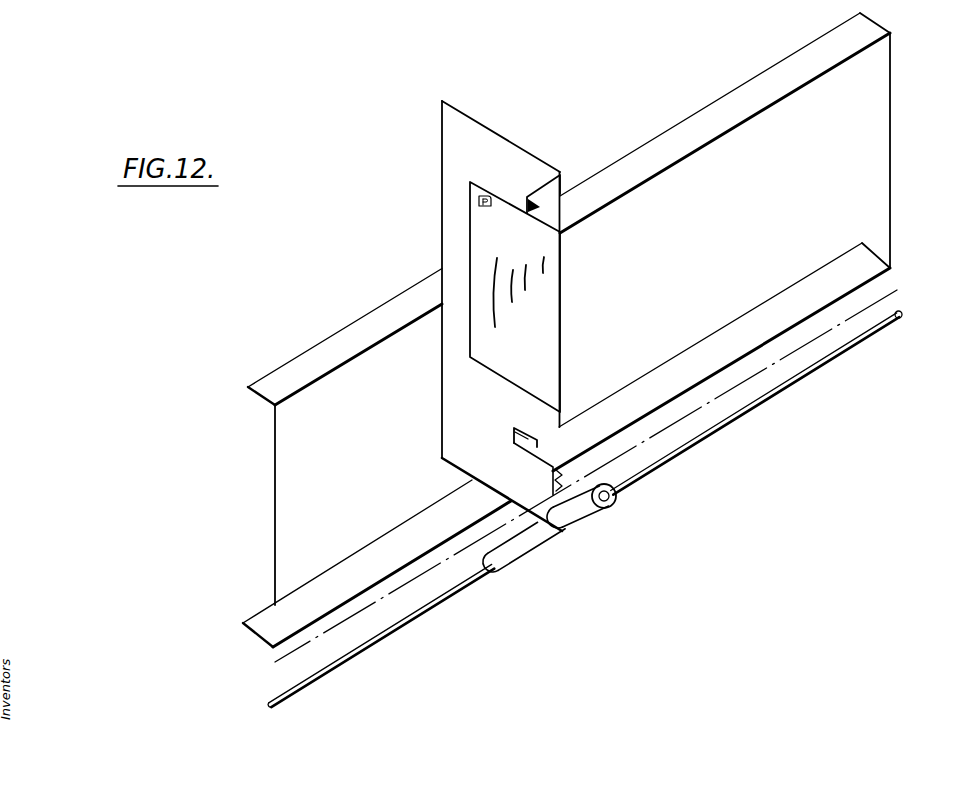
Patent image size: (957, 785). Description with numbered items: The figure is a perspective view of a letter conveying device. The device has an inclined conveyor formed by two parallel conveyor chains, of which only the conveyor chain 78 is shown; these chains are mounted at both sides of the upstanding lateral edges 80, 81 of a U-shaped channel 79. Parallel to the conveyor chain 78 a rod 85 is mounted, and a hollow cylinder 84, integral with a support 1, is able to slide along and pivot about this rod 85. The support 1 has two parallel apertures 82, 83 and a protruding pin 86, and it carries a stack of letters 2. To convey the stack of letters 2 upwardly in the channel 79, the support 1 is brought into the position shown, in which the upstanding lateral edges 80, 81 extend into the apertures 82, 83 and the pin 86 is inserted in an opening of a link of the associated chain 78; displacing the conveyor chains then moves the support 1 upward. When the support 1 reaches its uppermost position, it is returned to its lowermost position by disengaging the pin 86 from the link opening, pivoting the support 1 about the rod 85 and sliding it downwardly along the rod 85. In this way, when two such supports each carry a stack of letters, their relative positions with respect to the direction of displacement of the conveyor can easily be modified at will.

The support 1 is at (467, 115).
The stack of letters 2 is at (503, 373).
The conveyor chain 78 is at (591, 337).
The U-shaped channel 79 is at (877, 158).
The upstanding lateral edge 80 is at (667, 127).
The upstanding lateral edge 81 is at (767, 310).
The aperture 82 is at (529, 199).
The aperture 83 is at (517, 440).
The hollow cylinder 84 is at (580, 512).
The rod 85 is at (700, 437).
The protruding pin 86 is at (554, 477).